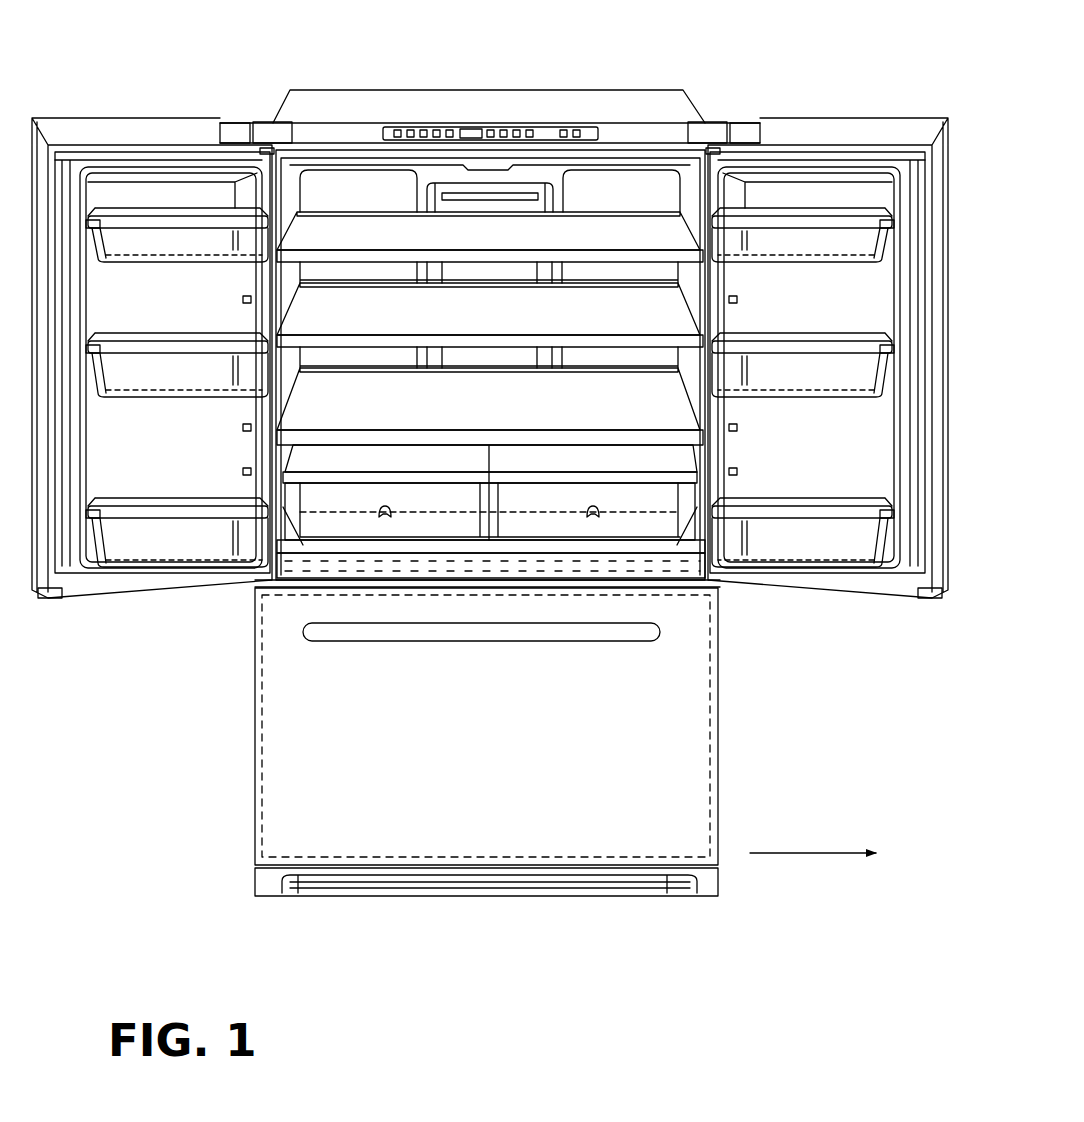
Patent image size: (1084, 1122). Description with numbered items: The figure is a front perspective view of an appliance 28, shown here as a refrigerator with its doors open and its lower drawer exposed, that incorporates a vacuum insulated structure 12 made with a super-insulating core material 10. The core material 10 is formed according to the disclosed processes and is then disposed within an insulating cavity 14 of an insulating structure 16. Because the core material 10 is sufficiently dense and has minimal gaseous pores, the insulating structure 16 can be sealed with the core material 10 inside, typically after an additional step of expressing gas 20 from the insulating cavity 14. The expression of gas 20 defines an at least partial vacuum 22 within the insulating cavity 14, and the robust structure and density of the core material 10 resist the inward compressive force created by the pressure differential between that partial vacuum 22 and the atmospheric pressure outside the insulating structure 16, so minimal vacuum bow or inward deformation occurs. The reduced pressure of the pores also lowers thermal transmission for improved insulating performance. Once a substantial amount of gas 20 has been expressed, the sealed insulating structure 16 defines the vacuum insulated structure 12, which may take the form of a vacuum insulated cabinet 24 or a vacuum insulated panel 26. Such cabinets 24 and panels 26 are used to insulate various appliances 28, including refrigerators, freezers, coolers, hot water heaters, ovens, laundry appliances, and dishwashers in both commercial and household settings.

The super-insulating core material 10 is at (367, 115).
The vacuum insulated structure 12 is at (459, 82).
The insulating cavity 14 is at (667, 132).
The insulating structure 16 is at (237, 611).
The gas 20 is at (797, 852).
The at least partial vacuum 22 is at (270, 113).
The vacuum insulated cabinet 24 is at (691, 78).
The vacuum insulated panel 26 is at (62, 118).
The appliance 28 is at (197, 748).